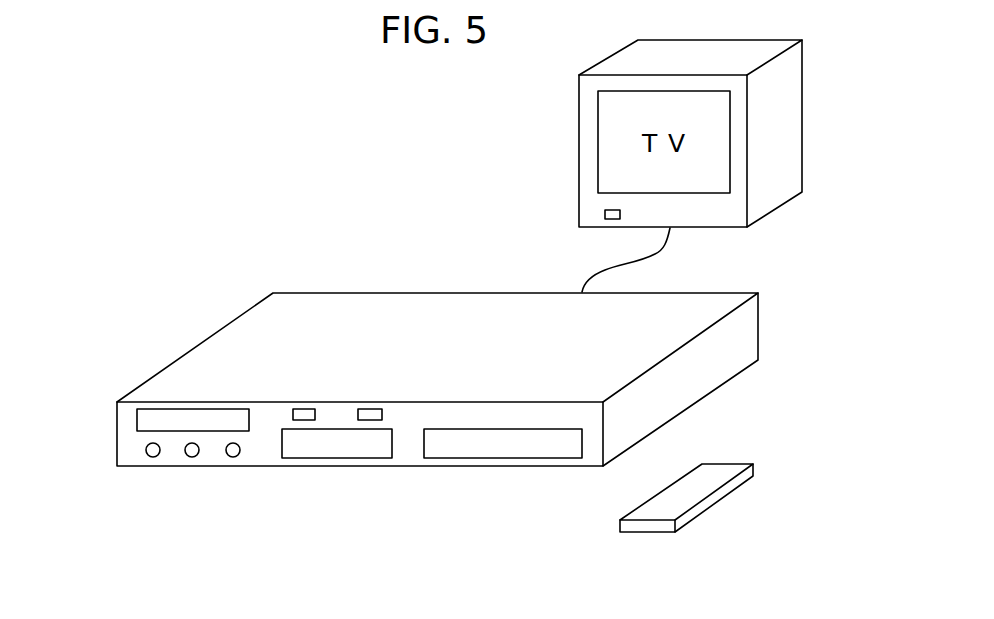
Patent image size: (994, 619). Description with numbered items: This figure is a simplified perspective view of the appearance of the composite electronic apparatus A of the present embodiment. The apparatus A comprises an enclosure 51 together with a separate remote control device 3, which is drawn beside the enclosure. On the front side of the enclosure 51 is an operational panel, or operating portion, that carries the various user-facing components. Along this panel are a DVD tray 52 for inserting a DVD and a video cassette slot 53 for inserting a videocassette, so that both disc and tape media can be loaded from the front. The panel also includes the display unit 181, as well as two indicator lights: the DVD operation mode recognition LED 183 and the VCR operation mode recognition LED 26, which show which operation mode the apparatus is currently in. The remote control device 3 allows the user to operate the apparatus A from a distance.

The composite electronic apparatus A is at (353, 257).
The enclosure 51 is at (702, 400).
The DVD tray 52 is at (137, 420).
The DVD operation mode recognition LED 183 is at (305, 409).
The VCR operation mode recognition LED 26 is at (368, 409).
The display unit 181 is at (313, 458).
The video cassette slot 53 is at (516, 458).
The remote control device 3 is at (718, 497).